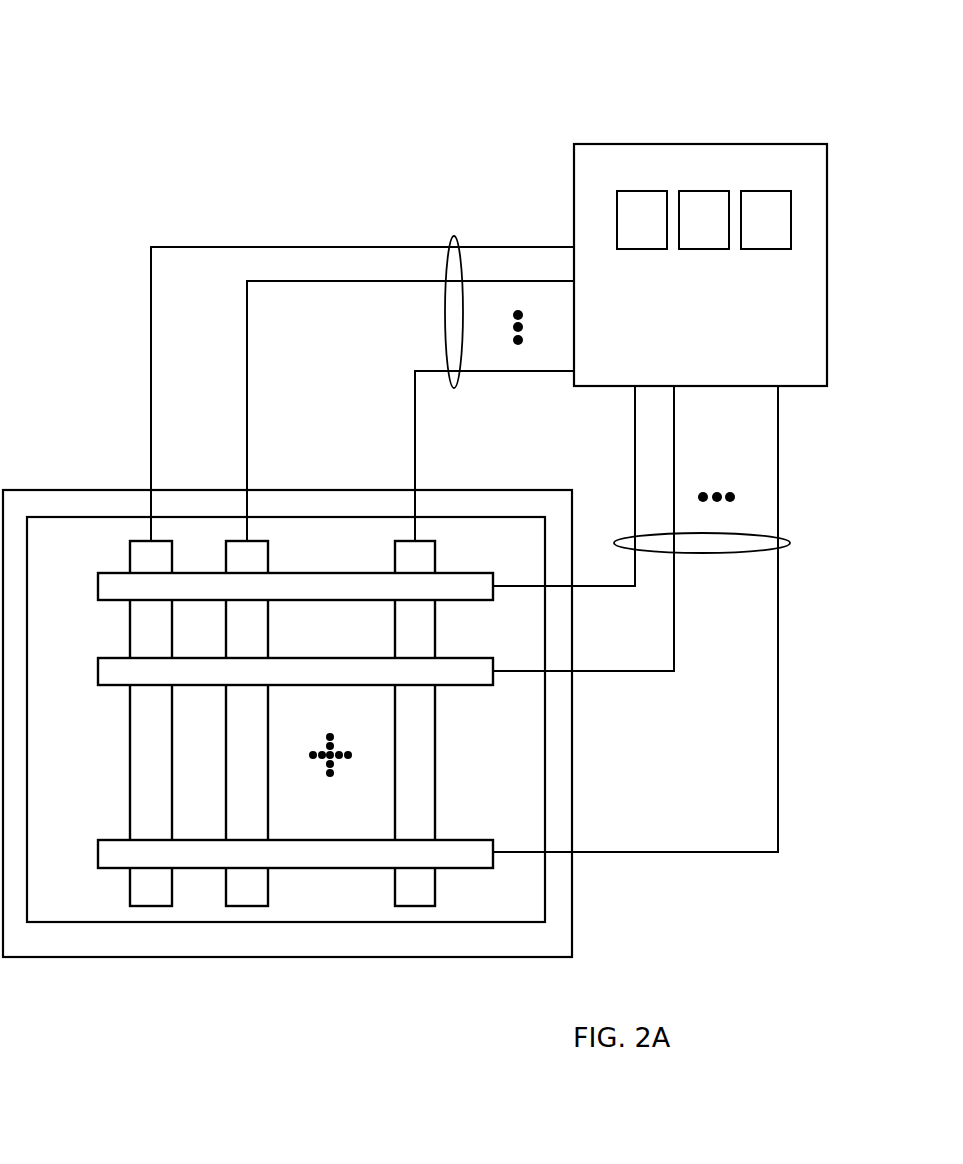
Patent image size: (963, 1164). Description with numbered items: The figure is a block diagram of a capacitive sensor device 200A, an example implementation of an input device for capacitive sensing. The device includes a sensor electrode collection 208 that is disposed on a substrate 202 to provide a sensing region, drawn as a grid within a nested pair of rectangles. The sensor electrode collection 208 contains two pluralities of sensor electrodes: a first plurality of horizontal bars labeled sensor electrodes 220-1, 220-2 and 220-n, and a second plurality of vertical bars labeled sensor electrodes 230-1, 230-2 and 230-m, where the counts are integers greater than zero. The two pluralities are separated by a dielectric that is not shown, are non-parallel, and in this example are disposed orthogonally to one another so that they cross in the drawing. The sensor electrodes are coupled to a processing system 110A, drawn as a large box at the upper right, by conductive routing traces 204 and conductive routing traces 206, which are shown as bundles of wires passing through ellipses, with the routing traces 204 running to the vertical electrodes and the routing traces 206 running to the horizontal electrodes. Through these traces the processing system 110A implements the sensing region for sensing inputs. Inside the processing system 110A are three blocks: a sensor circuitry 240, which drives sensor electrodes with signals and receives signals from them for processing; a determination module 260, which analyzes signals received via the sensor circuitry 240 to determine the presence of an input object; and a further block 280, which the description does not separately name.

The capacitive sensor device 200A is at (112, 82).
The processing system 110A is at (681, 355).
The sensor circuitry 240 is at (657, 228).
The determination module 260 is at (719, 228).
The processing system module 280 is at (781, 228).
The conductive routing traces 204 is at (453, 237).
The conductive routing traces 206 is at (790, 541).
The substrate 202 is at (80, 957).
The sensor electrode collection 208 is at (172, 922).
The sensor electrode 220-1 is at (118, 572).
The sensor electrode 220-2 is at (451, 658).
The sensor electrode 220-n is at (312, 840).
The sensor electrode 230-1 is at (130, 893).
The sensor electrode 230-2 is at (268, 893).
The sensor electrode 230-m is at (437, 890).